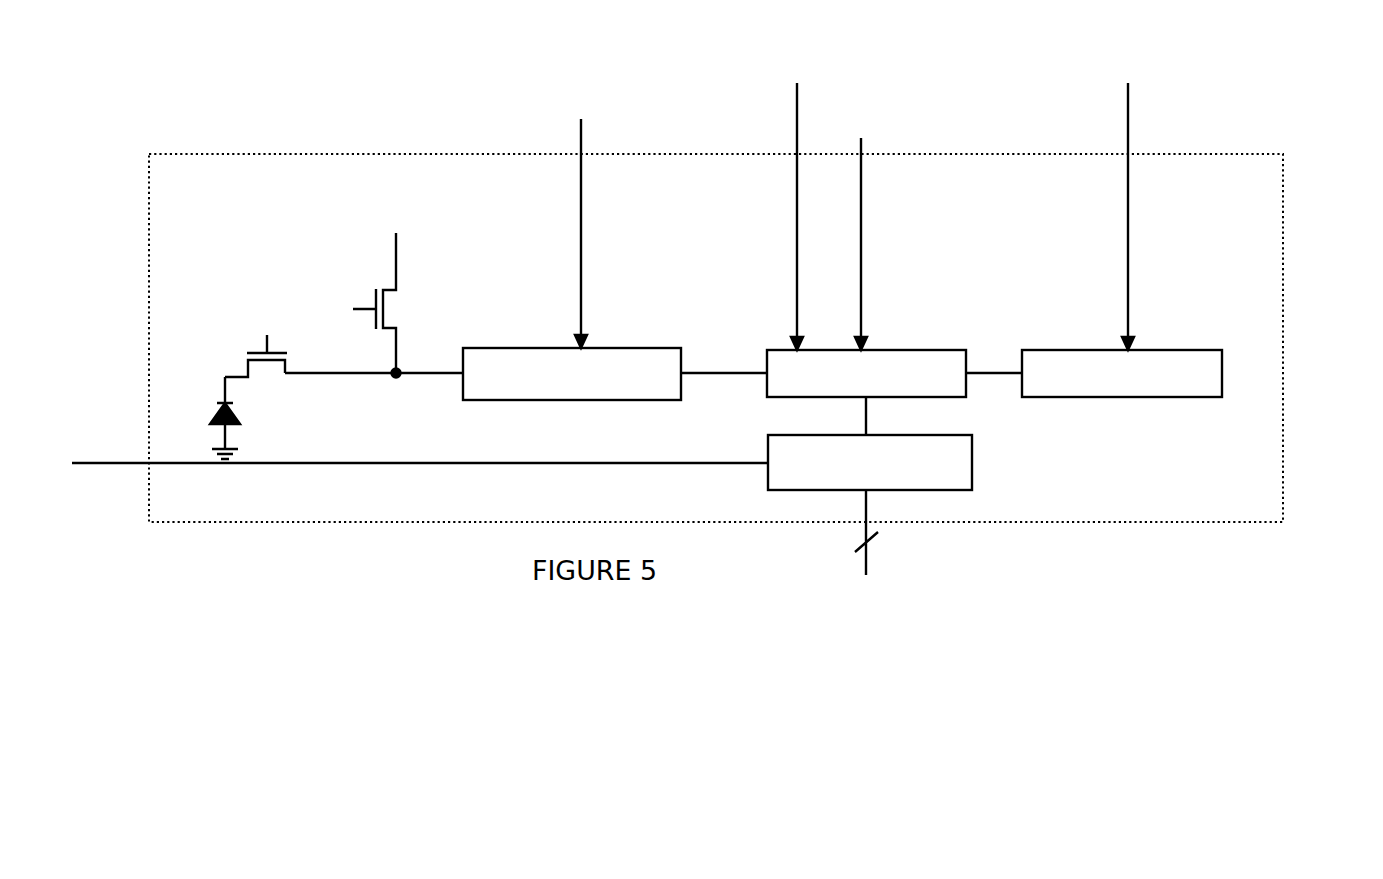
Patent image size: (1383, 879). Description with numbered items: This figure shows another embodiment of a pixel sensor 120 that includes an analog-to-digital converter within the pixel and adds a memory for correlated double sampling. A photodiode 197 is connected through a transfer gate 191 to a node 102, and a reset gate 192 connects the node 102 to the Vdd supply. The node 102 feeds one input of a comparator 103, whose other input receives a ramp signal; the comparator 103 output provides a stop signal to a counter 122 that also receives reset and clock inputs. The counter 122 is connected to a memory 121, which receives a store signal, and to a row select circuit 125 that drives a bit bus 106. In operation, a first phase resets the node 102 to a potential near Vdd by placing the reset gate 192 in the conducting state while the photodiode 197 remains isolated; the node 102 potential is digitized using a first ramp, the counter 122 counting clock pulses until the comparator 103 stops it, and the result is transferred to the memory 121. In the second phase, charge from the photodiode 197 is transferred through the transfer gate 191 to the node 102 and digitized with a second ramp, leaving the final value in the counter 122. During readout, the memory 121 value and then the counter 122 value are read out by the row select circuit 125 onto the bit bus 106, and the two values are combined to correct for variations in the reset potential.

The pixel sensor 120 is at (1286, 399).
The transfer gate 191 is at (257, 352).
The reset gate 192 is at (376, 319).
The photodiode 197 is at (231, 405).
The node 102 is at (425, 375).
The comparator 103 is at (603, 398).
The counter 122 is at (968, 357).
The memory 121 is at (1157, 350).
The row select circuit 125 is at (768, 438).
The bit bus 106 is at (867, 569).